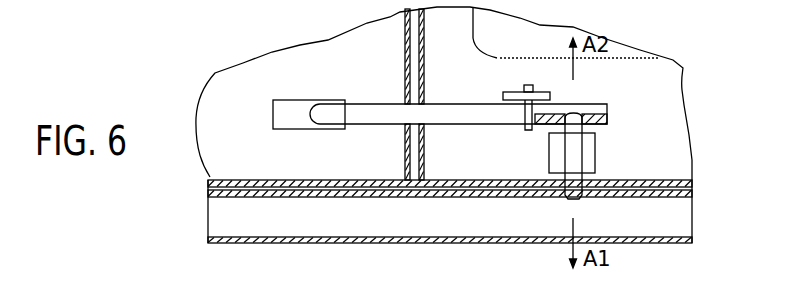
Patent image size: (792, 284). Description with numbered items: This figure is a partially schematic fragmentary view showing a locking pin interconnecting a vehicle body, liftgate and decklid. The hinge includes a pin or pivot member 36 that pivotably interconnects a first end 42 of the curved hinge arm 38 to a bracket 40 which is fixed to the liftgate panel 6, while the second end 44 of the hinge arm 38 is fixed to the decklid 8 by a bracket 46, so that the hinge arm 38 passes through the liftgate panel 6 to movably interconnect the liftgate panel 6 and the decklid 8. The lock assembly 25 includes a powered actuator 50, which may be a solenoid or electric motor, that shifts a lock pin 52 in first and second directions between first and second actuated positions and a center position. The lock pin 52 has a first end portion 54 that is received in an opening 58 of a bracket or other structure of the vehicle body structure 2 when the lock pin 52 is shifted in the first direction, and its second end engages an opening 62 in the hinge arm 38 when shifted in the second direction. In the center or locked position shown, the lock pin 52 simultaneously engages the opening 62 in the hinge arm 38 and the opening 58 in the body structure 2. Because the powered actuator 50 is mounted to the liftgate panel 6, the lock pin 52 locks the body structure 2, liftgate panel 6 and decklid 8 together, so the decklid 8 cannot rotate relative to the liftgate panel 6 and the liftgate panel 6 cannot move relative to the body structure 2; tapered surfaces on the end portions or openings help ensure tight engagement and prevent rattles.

The vehicle body structure 2 is at (238, 246).
The liftgate panel 6 is at (678, 72).
The decklid 8 is at (225, 83).
The lock assembly 25 is at (618, 155).
The pivot member 36 is at (528, 85).
The hinge arm 38 is at (453, 107).
The bracket 40 is at (535, 85).
The first end 42 is at (498, 125).
The second end 44 is at (313, 114).
The bracket 46 is at (280, 113).
The powered actuator 50 is at (596, 166).
The lock pin 52 is at (572, 116).
The first end portion 54 is at (565, 199).
The opening 58 is at (582, 200).
The opening 62 is at (574, 113).